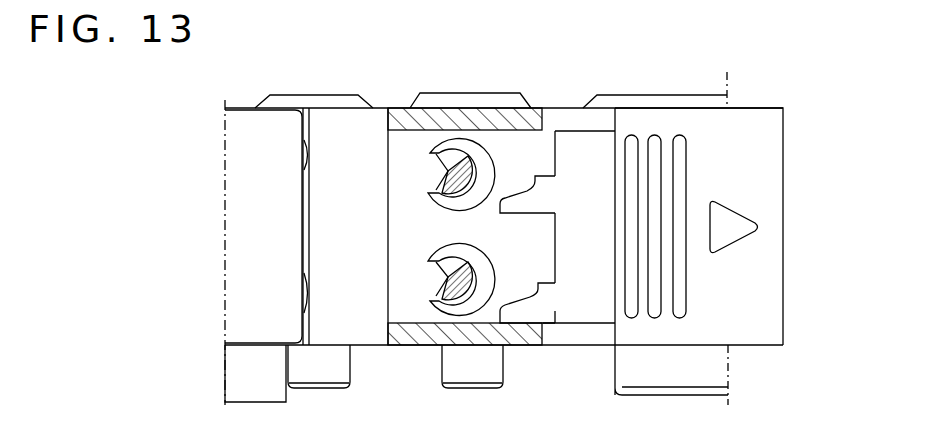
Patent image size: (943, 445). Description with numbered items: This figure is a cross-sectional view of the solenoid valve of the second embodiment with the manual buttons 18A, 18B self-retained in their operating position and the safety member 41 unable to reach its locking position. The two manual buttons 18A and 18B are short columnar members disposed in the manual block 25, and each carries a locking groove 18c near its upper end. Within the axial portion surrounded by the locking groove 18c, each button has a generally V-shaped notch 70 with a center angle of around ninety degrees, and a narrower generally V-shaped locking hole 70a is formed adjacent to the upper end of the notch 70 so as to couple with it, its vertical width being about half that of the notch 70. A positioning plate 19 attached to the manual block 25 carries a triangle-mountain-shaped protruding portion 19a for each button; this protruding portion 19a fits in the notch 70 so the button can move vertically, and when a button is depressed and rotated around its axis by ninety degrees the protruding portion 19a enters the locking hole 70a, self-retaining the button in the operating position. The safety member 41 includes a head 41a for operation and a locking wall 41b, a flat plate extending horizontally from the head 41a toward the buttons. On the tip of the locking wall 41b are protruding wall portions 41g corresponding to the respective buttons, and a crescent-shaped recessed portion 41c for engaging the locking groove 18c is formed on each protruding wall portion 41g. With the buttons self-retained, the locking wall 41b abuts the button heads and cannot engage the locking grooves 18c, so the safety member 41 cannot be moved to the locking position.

The positioning plate 19 is at (393, 297).
The protruding portion 19a is at (440, 177).
The manual block 25 is at (455, 108).
The first manual button 18A is at (477, 140).
The second manual button 18B is at (481, 327).
The locking groove 18c is at (494, 168).
The notch 70 is at (448, 158).
The locking hole 70a is at (440, 181).
The safety member 41 is at (671, 221).
The head 41a is at (780, 148).
The locking wall 41b is at (583, 145).
The recessed portion 41c is at (523, 296).
The protruding wall portion 41g is at (521, 215).